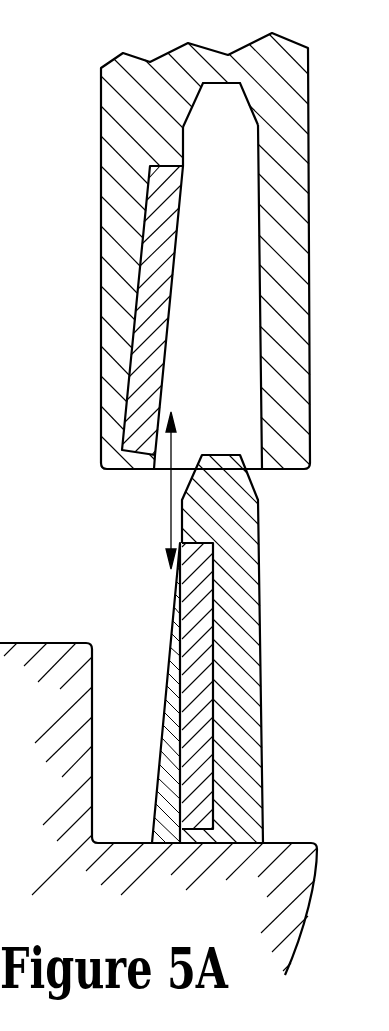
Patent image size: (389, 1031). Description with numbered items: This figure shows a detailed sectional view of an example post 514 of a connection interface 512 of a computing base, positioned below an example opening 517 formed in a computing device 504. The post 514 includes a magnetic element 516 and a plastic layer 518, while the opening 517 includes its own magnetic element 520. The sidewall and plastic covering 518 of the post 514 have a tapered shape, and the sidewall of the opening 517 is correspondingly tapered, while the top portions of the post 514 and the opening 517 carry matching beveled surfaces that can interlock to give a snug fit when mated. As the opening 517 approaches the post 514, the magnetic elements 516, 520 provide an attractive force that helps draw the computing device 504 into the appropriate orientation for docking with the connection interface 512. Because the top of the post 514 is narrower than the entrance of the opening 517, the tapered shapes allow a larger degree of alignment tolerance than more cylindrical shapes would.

The computing device 504 is at (101, 241).
The opening 517 is at (198, 103).
The magnetic element 520 is at (168, 330).
The post 514 is at (263, 672).
The magnetic element 516 is at (186, 606).
The plastic layer 518 is at (165, 697).
The connection interface 512 is at (305, 912).